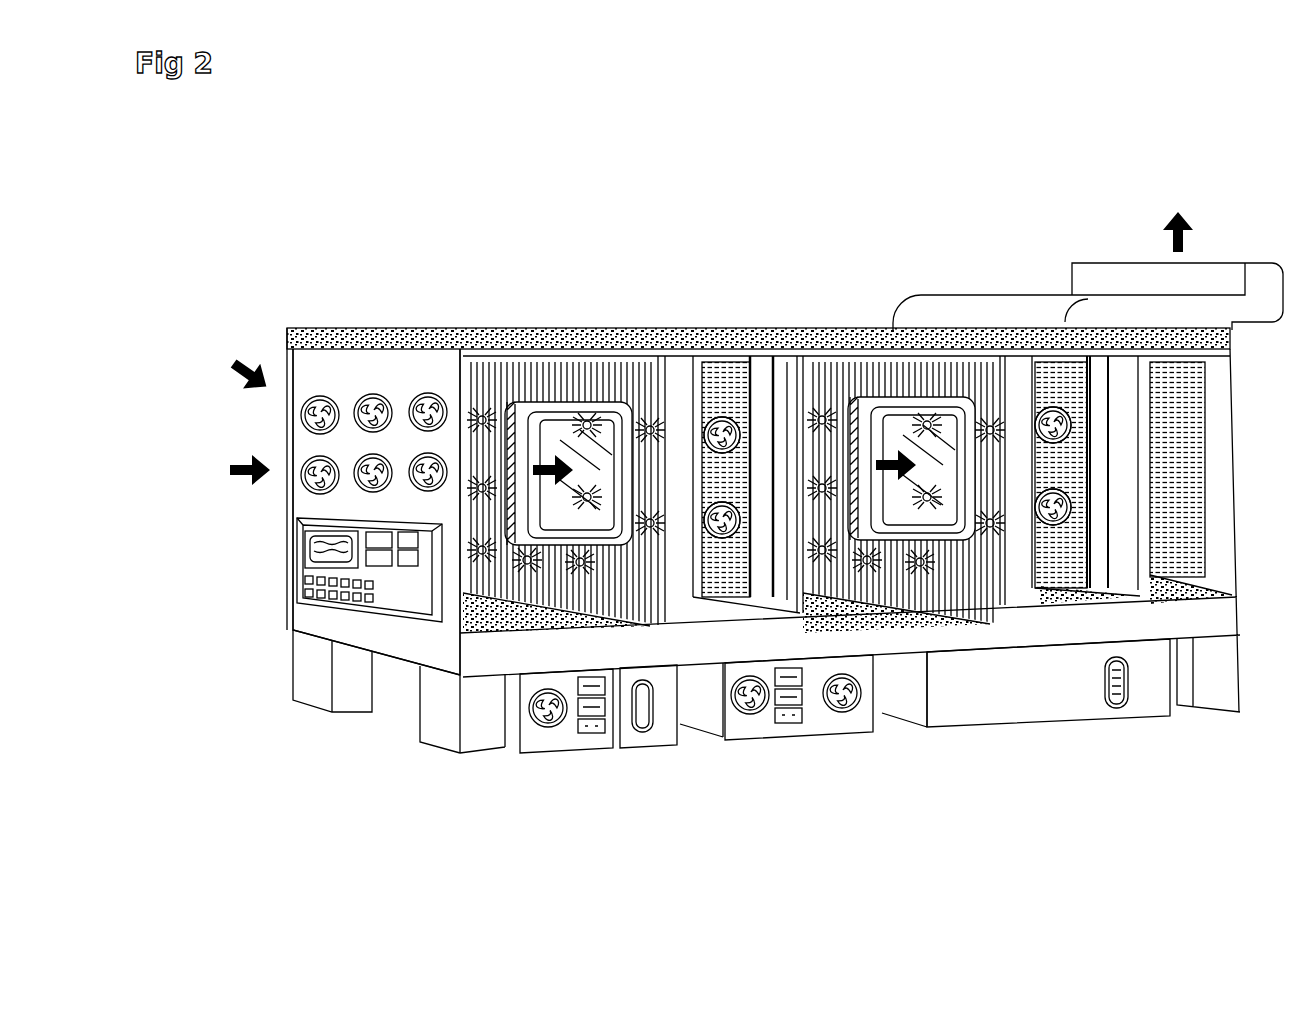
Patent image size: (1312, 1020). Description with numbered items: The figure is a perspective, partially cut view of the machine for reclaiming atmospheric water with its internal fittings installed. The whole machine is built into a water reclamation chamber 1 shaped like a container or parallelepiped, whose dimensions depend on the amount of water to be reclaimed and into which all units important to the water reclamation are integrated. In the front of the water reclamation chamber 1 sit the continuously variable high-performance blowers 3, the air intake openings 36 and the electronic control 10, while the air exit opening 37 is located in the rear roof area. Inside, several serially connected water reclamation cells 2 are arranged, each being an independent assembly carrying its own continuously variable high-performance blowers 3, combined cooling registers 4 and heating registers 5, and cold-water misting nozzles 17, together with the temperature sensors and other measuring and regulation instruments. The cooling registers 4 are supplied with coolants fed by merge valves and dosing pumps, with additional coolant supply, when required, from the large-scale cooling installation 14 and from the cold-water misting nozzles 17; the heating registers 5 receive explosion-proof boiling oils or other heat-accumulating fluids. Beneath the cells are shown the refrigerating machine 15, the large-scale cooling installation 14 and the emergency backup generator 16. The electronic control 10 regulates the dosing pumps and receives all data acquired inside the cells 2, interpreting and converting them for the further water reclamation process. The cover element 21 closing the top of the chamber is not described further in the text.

The water reclamation chamber 1 is at (341, 373).
The water reclamation cell 2 is at (547, 400).
The continuously variable high-performance blower 3 is at (300, 420).
The cooling register 4 is at (760, 448).
The heating register 5 is at (790, 448).
The electronic control 10 is at (297, 583).
The large-scale cooling installation 14 is at (818, 713).
The refrigerating machine 15 is at (575, 717).
The emergency backup generator 16 is at (1040, 687).
The cold-water misting nozzle 17 is at (634, 425).
The top cover 21 is at (424, 340).
The air intake opening 36 is at (335, 395).
The air exit opening 37 is at (1265, 283).